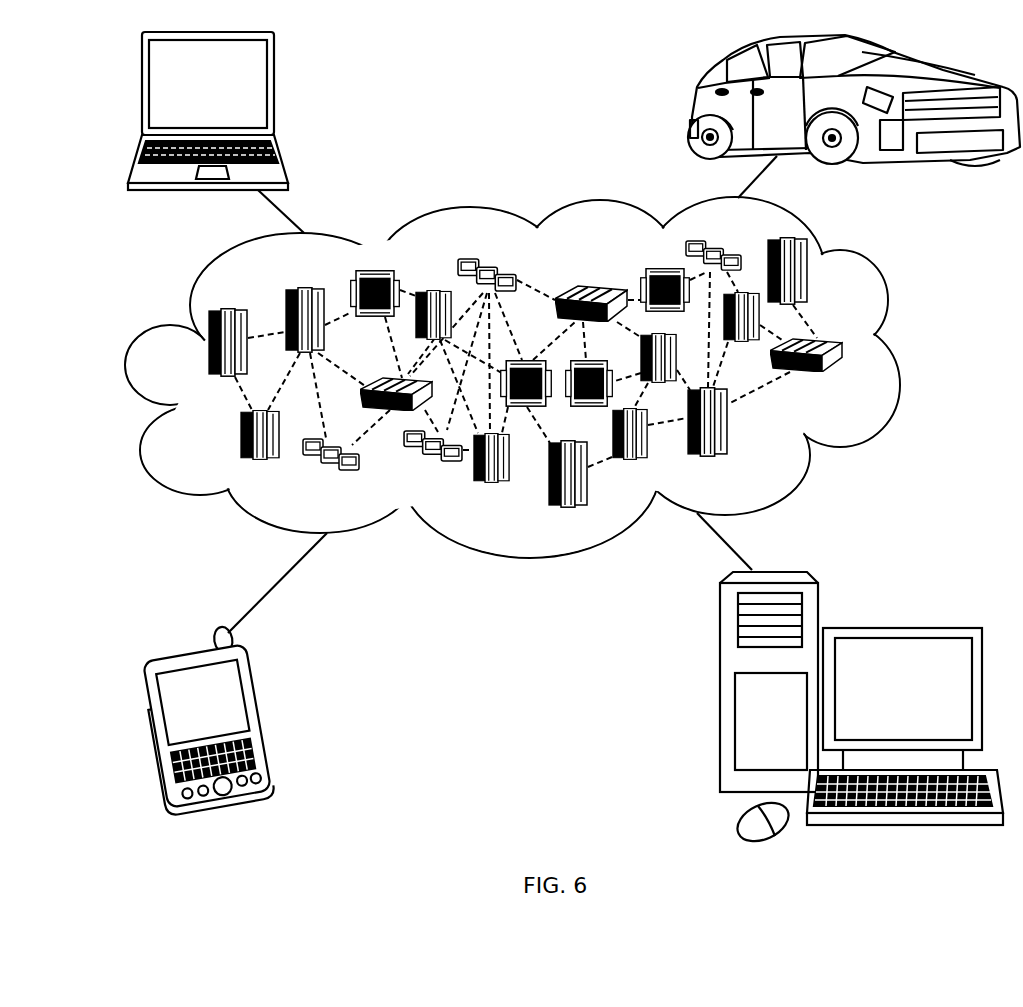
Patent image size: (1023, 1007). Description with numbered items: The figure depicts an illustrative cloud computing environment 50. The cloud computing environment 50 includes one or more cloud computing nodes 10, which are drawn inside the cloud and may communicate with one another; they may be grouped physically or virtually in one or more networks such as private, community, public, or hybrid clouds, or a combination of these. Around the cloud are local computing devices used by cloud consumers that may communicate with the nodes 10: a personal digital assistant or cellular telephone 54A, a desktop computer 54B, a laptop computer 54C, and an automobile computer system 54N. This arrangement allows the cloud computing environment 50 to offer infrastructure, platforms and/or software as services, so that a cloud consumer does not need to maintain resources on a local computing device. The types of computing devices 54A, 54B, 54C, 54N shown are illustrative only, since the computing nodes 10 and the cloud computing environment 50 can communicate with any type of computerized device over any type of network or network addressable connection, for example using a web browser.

The cloud computing node 10 is at (852, 381).
The cloud computing environment 50 is at (903, 352).
The personal digital assistant (PDA) or cellular telephone 54A is at (263, 714).
The desktop computer 54B is at (902, 628).
The laptop computer 54C is at (277, 91).
The automobile computer system 54N is at (693, 103).